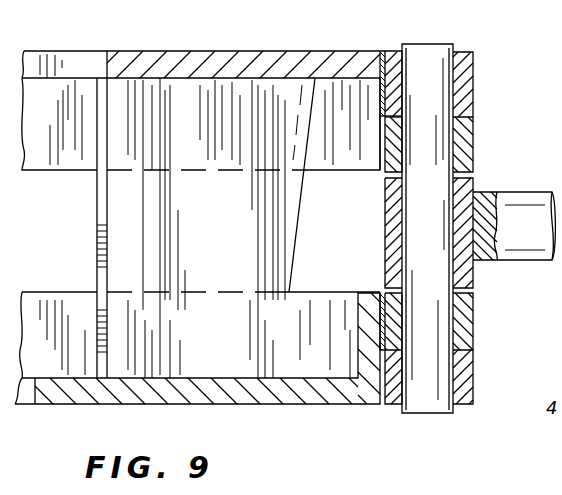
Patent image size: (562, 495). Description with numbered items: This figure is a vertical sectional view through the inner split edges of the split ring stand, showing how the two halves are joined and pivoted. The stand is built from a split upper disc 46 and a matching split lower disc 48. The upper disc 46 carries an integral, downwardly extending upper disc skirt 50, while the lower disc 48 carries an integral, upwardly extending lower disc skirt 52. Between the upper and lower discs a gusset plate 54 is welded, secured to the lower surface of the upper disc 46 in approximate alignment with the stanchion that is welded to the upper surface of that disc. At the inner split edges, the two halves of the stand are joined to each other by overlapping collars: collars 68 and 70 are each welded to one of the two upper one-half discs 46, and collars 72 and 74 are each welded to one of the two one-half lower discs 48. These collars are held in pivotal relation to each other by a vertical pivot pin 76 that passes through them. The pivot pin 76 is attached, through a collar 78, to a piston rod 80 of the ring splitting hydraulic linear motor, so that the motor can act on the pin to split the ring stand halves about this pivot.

The split upper disc 46 is at (325, 62).
The split lower disc 48 is at (337, 404).
The upper disc skirt 50 is at (80, 165).
The lower disc skirt 52 is at (65, 308).
The gusset plate 54 is at (97, 212).
The overlapping collar 68 is at (470, 93).
The overlapping collar 70 is at (470, 150).
The collar 72 is at (473, 322).
The collar 74 is at (473, 380).
The vertical pivot pin 76 is at (425, 58).
The collar 78 is at (383, 222).
The piston rod 80 is at (523, 210).